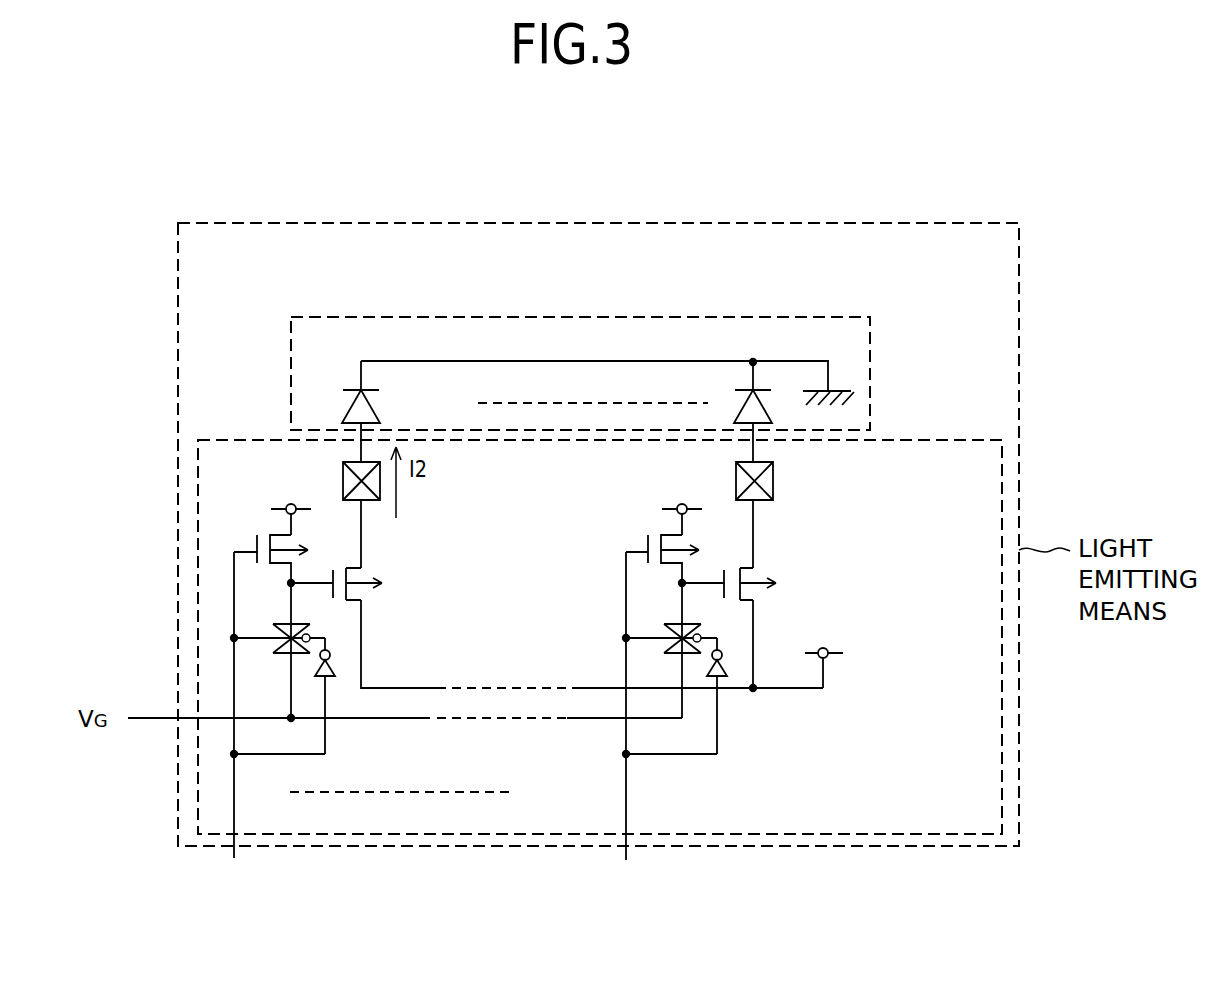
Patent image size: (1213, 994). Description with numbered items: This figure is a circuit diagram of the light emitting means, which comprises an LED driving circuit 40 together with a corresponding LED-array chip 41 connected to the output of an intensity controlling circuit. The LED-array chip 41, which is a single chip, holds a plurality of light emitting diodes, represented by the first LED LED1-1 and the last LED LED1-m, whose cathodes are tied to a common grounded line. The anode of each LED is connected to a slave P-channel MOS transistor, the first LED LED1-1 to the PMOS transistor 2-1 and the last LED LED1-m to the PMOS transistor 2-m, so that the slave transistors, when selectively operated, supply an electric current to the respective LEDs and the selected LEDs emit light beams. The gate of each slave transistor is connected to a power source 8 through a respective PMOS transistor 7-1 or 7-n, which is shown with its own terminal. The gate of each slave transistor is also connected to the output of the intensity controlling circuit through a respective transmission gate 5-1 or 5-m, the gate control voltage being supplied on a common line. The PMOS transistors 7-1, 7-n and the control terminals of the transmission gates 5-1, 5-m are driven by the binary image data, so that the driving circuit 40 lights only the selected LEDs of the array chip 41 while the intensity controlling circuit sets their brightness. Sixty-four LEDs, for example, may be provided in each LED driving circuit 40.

The LED-array chip 41 is at (645, 317).
The LED driving circuit 40 is at (940, 440).
The LED LED1-1 is at (418, 392).
The LED LED1-m is at (772, 412).
The power source 8 is at (291, 504).
The PMOS transistor 7-1 is at (259, 530).
The PMOS transistor 7-n is at (649, 530).
The PMOS transistor 2-1 is at (362, 595).
The PMOS transistor 2-m is at (754, 595).
The transmission gate 5-1 is at (280, 656).
The transmission gate 5-m is at (688, 625).